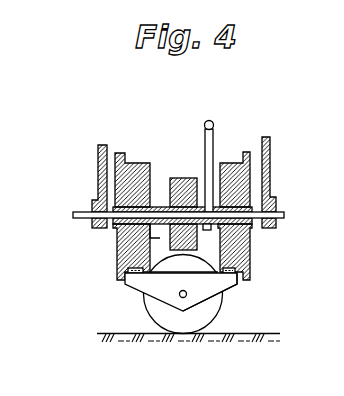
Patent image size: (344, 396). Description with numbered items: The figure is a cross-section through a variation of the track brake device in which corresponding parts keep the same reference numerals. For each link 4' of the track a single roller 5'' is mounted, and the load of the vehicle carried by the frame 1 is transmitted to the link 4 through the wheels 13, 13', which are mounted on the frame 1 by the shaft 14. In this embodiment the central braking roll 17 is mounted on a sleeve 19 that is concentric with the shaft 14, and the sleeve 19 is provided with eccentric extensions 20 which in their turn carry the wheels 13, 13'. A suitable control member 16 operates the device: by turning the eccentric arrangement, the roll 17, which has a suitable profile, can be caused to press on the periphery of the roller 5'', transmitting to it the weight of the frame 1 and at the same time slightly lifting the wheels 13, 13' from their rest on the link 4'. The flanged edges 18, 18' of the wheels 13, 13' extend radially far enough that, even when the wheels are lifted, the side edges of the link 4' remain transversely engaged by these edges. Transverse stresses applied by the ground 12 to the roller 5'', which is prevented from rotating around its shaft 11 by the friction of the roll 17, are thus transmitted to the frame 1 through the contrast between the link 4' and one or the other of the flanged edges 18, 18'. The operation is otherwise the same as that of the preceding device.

The frame 1 is at (100, 153).
The link 4 is at (138, 292).
The link 4' is at (251, 292).
The roller 5'' is at (234, 295).
The shaft 11 is at (180, 294).
The ground 12 is at (130, 333).
The wheel 13 is at (92, 221).
The wheel 13' is at (274, 253).
The shaft 14 is at (285, 215).
The control member 16 is at (206, 121).
The braking roll 17 is at (185, 180).
The flanged edge 18 is at (118, 146).
The flanged edge 18' is at (247, 146).
The sleeve 19 is at (118, 265).
The eccentric extensions 20 is at (113, 225).